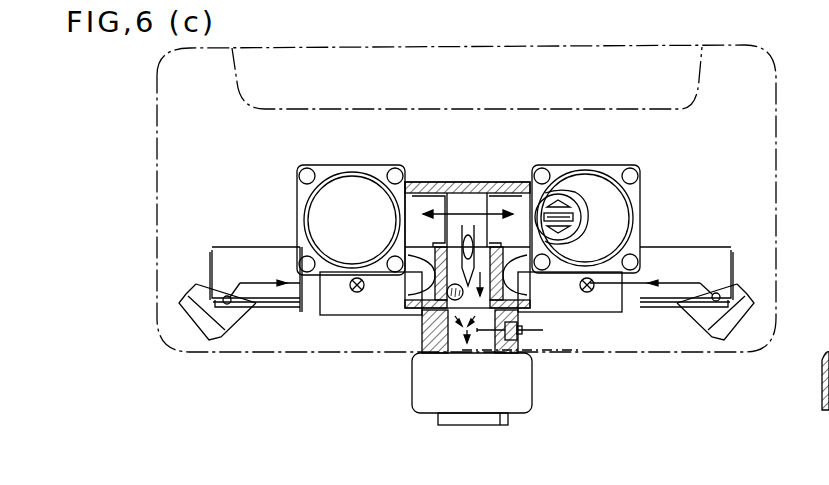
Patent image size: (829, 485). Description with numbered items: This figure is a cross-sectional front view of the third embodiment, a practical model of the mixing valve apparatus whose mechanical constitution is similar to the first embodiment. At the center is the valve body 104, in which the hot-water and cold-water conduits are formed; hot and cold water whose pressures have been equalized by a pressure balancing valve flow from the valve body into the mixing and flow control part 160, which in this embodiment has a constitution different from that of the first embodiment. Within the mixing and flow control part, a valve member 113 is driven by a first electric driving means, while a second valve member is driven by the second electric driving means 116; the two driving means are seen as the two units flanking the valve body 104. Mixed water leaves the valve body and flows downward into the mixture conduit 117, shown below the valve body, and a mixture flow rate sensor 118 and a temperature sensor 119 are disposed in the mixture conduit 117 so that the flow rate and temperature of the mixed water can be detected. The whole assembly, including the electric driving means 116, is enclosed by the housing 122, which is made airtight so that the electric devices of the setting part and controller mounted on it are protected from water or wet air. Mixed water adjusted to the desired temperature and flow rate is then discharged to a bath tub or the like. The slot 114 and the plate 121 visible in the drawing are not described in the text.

The valve body 104 is at (465, 183).
The valve member 113 is at (577, 205).
The adjustment slot 114 is at (573, 217).
The second electric driving means 116 is at (297, 205).
The mixture conduit 117 is at (453, 357).
The mixture flow rate sensor 118 is at (420, 312).
The temperature sensor 119 is at (497, 355).
The mounting plate 121 is at (598, 313).
The housing 122 is at (777, 108).
The mixing and flow control part 160 is at (467, 57).